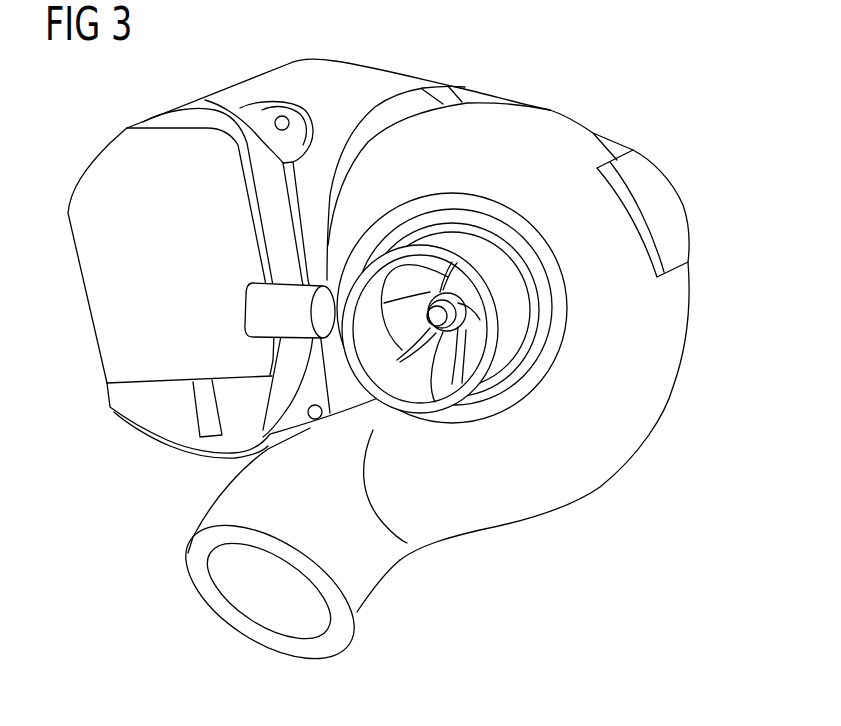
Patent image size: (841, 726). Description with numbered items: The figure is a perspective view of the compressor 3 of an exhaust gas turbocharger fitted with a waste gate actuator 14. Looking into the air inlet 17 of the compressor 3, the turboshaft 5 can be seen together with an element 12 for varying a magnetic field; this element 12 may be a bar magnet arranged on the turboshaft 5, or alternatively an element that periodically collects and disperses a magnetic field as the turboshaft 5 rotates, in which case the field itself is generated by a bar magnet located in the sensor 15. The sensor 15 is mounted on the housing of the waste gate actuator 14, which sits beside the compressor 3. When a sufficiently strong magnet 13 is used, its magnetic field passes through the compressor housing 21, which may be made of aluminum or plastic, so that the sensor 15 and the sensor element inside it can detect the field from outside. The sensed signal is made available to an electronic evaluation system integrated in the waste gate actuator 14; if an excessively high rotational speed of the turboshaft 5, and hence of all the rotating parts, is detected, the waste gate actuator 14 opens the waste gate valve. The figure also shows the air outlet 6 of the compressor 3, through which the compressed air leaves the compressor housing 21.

The compressor 3 is at (551, 86).
The turboshaft 5 is at (441, 388).
The air outlet 6 is at (252, 591).
The element for varying the magnetic field 12 is at (473, 355).
The magnet 13 is at (465, 313).
The waste gate actuator 14 is at (110, 172).
The sensor 15 is at (267, 307).
The air inlet 17 is at (358, 358).
The compressor housing 21 is at (457, 240).